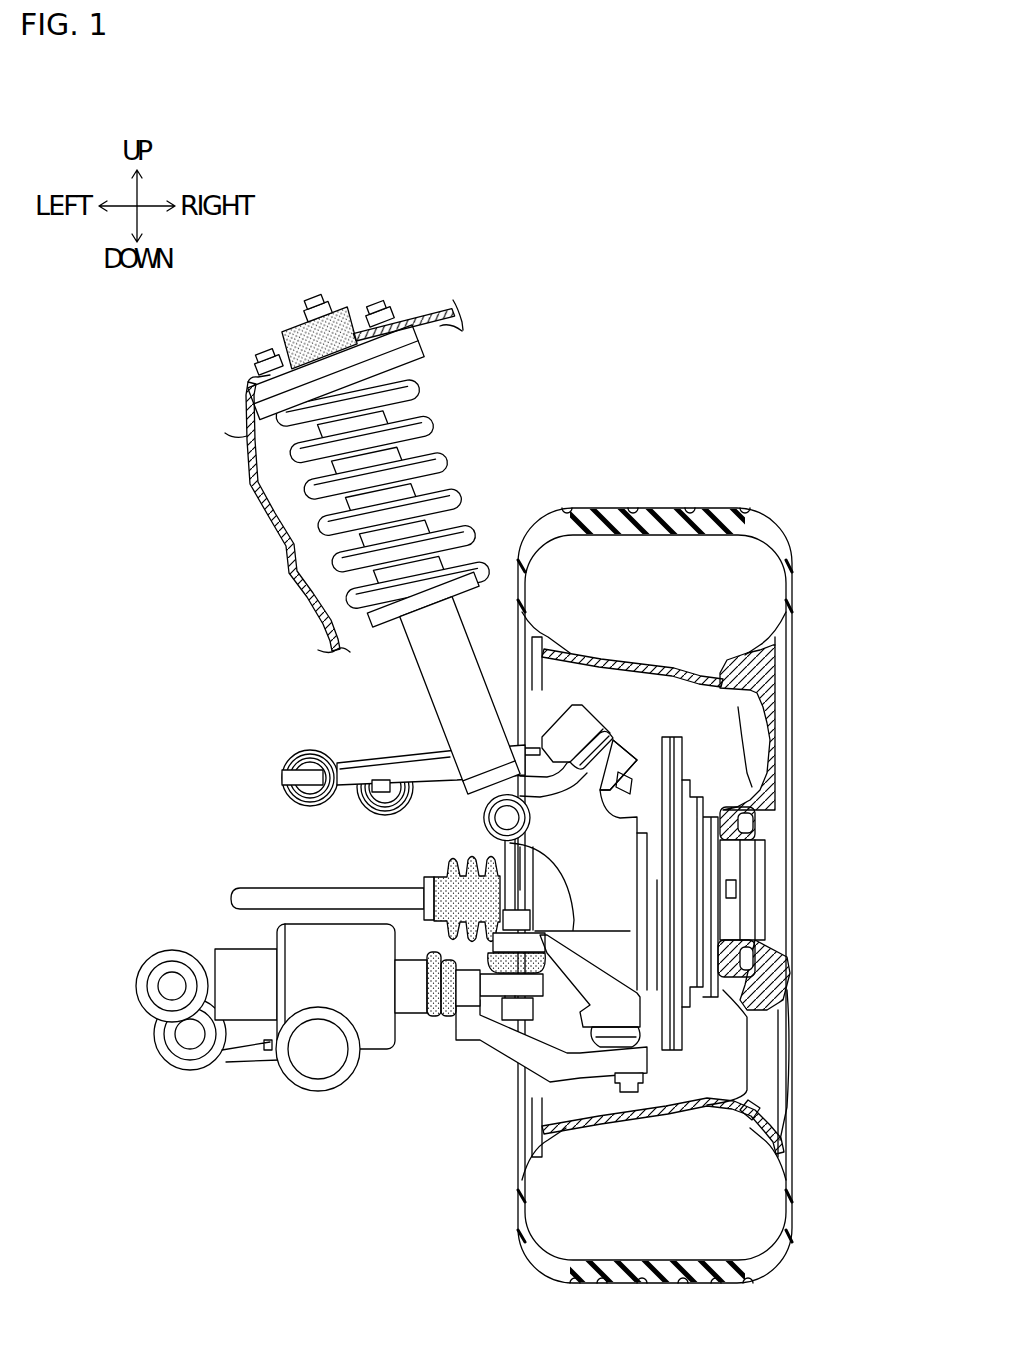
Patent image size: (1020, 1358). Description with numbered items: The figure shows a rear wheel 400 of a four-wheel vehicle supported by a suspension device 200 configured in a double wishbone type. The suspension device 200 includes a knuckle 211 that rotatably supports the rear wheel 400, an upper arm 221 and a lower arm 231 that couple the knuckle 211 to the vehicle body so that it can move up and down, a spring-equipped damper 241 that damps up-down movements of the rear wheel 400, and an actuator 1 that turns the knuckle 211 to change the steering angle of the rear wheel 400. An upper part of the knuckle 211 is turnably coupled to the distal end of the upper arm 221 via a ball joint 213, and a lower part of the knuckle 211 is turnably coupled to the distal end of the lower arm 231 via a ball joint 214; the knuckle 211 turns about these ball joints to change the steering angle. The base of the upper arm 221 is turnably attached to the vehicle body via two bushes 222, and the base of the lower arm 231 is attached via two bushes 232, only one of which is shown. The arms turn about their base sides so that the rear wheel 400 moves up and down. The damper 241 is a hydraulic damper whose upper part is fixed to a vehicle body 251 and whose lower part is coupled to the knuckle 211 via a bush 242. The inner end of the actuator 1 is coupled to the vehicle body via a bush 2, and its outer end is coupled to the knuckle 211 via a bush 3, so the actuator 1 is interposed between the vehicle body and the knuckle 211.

The actuator 1 is at (387, 1086).
The bush 2 is at (157, 1000).
The bush 3 is at (501, 1000).
The suspension device 200 is at (575, 425).
The knuckle 211 is at (612, 833).
The ball joint 213 is at (615, 726).
The ball joint 214 is at (640, 1030).
The upper arm 221 is at (430, 748).
The bushes 222 is at (380, 812).
The lower arm 231 is at (429, 1027).
The bushes 232 is at (174, 1053).
The damper 241 is at (424, 567).
The bush 242 is at (507, 818).
The vehicle body 251 is at (247, 428).
The rear wheel 400 is at (663, 508).